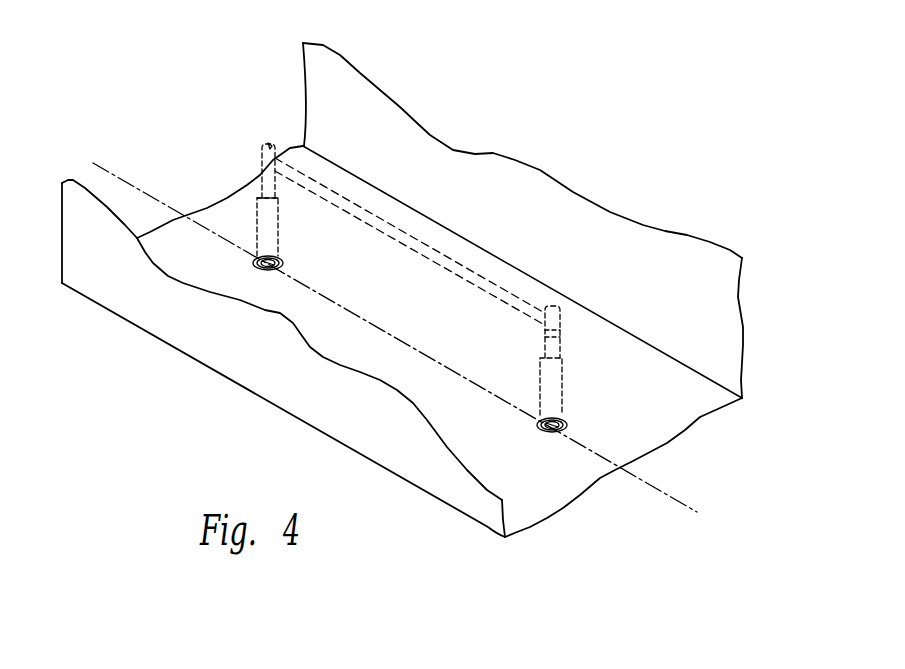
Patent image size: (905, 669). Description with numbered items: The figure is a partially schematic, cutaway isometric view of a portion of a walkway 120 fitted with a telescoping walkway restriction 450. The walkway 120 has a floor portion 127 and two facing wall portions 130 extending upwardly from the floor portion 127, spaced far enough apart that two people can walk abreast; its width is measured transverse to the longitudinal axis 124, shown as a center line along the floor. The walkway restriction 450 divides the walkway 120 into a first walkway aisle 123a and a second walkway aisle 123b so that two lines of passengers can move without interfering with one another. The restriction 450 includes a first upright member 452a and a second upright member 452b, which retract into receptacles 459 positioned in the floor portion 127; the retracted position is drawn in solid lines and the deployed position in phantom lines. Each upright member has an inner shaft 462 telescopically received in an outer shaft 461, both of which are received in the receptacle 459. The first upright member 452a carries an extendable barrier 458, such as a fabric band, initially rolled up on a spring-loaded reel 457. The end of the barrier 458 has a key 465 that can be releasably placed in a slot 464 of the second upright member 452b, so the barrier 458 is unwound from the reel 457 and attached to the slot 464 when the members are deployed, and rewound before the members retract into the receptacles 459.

The walkway 120 is at (248, 96).
The first walkway aisle 123a is at (328, 337).
The second walkway aisle 123b is at (392, 210).
The longitudinal axis 124 is at (677, 497).
The floor portion 127 is at (543, 472).
The wall portions 130 is at (723, 303).
The walkway restriction 450 is at (531, 278).
The first upright member 452a is at (577, 371).
The second upright member 452b is at (257, 212).
The spring-loaded reel 457 is at (562, 318).
The extendable barrier 458 is at (440, 248).
The receptacles 459 is at (253, 264).
The outer shaft 461 is at (540, 377).
The inner shaft 462 is at (560, 338).
The slot 464 is at (273, 142).
The key 465 is at (278, 200).